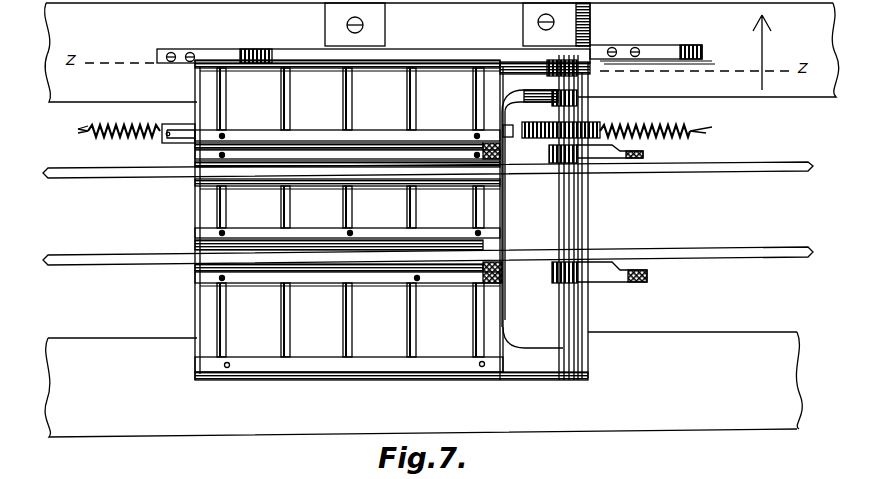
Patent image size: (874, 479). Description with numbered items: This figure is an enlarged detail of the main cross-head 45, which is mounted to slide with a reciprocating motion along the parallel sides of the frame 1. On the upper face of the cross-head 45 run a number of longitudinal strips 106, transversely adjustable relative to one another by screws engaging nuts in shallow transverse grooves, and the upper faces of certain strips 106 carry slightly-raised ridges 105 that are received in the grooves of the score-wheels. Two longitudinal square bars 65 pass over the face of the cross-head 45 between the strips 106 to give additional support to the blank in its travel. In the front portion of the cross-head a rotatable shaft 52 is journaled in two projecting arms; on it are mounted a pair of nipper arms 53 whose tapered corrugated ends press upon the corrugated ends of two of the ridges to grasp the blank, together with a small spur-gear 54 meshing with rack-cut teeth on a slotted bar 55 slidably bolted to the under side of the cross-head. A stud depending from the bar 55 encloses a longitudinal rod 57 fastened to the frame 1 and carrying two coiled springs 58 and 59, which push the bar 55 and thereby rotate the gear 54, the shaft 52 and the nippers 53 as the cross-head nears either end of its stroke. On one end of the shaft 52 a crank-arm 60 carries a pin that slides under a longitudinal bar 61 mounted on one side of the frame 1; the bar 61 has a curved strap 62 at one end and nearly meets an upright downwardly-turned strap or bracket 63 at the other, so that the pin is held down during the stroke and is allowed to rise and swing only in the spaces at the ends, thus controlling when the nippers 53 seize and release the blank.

The frame 1 is at (442, 220).
The cross-head 45 is at (391, 220).
The shaft 52 is at (579, 305).
The arms 53 is at (643, 153).
The spur-gear 54 is at (583, 125).
The bar 55 is at (183, 143).
The rod 57 is at (394, 125).
The coiled spring 58 is at (124, 122).
The coiled spring 59 is at (646, 126).
The crank-arm 60 is at (578, 72).
The longitudinal bar 61 is at (256, 47).
The curved strap 62 is at (652, 45).
The upright downwardly-turned strap or bracket 63 is at (373, 47).
The longitudinal square bars 65 is at (428, 213).
The raised ridges 105 is at (365, 144).
The strips 106 is at (298, 131).